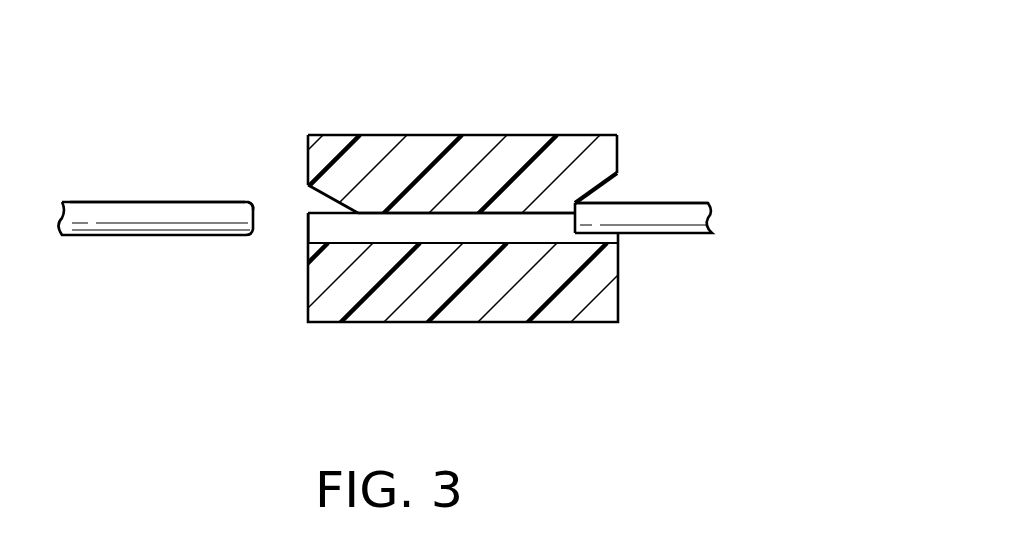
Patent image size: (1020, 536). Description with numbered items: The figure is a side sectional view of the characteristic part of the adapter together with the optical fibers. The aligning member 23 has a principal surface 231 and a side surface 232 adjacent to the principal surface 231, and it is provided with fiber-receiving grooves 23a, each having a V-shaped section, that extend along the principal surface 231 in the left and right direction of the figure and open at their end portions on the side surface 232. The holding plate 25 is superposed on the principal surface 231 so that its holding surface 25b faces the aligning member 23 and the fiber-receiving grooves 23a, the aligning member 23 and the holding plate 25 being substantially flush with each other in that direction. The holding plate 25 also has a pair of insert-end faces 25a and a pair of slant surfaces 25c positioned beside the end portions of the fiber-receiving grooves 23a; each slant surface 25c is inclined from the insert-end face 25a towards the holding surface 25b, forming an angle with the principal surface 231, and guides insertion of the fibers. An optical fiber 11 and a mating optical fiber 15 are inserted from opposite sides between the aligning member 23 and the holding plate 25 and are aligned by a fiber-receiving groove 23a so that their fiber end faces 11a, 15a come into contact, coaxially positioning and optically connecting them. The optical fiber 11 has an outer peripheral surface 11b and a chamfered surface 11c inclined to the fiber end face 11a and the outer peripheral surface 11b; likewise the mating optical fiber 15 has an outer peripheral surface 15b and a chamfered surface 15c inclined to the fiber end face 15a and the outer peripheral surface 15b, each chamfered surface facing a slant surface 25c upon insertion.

The optical fiber 11 is at (683, 215).
The fiber end face 11a is at (576, 233).
The outer peripheral surface 11b is at (657, 202).
The chamfered surface 11c is at (573, 203).
The mating optical fiber 15 is at (122, 217).
The fiber end face 15a is at (257, 226).
The outer peripheral surface 15b is at (157, 202).
The chamfered surface 15c is at (252, 202).
The aligning member 23 is at (340, 302).
The fiber-receiving groove 23a is at (497, 230).
The principal surface 231 is at (312, 209).
The side surface 232 is at (307, 279).
The holding plate 25 is at (477, 158).
The insert-end face 25a is at (308, 167).
The holding surface 25b is at (428, 214).
The slant surface 25c is at (318, 196).